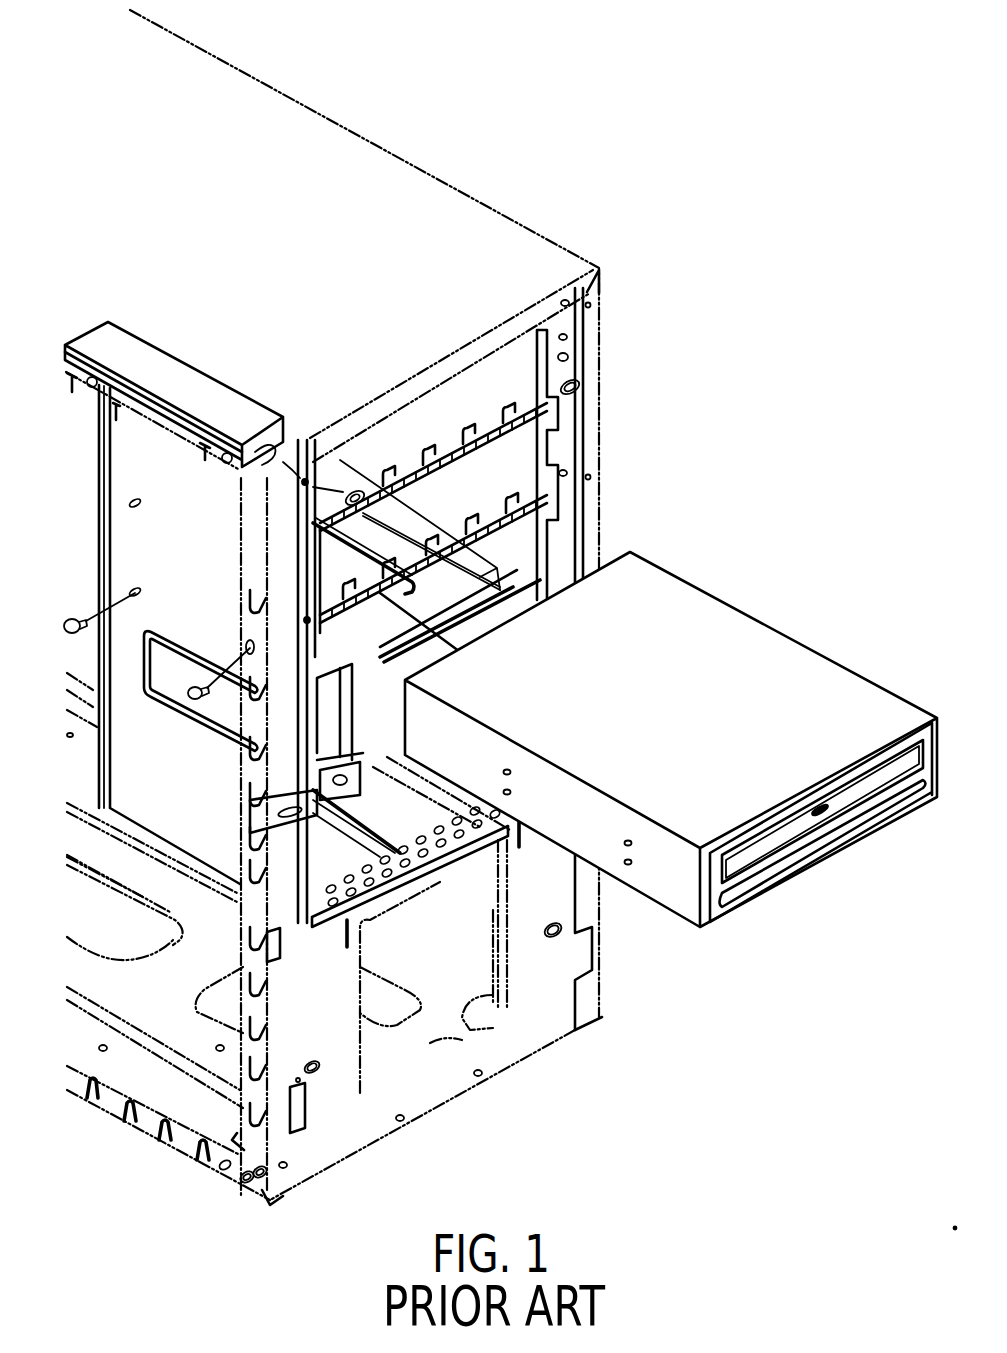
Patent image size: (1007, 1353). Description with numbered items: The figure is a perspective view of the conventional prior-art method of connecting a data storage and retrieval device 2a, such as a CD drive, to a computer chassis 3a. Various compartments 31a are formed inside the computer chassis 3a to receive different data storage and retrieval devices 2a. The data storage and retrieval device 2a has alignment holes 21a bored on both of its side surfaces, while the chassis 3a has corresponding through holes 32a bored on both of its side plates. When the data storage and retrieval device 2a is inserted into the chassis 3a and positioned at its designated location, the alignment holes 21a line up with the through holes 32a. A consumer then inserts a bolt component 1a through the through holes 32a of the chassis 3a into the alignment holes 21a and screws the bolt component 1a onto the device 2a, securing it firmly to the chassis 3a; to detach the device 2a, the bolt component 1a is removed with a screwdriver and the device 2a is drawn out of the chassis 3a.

The computer chassis 3a is at (352, 134).
The compartments 31a is at (515, 515).
The data storage and retrieval device 2a is at (775, 642).
The alignment holes 21a is at (628, 862).
The bolt component 1a is at (250, 655).
The through holes 32a is at (135, 592).